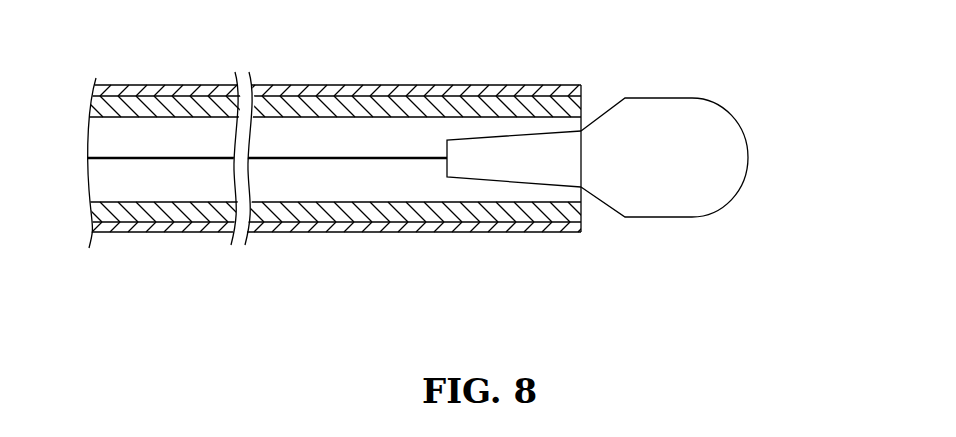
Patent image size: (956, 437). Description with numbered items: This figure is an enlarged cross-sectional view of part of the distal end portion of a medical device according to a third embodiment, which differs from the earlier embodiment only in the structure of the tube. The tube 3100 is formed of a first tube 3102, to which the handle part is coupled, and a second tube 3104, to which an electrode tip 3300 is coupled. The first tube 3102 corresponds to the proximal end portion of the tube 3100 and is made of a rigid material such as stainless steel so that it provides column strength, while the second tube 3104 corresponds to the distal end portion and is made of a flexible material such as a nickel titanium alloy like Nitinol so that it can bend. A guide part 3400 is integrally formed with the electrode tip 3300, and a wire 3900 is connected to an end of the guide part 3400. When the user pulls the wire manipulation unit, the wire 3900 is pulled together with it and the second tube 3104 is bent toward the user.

The tube 3100 is at (343, 125).
The first tube 3102 is at (208, 85).
The second tube 3104 is at (507, 85).
The electrode tip 3300 is at (690, 119).
The guide part 3400 is at (476, 185).
The wire 3900 is at (345, 160).